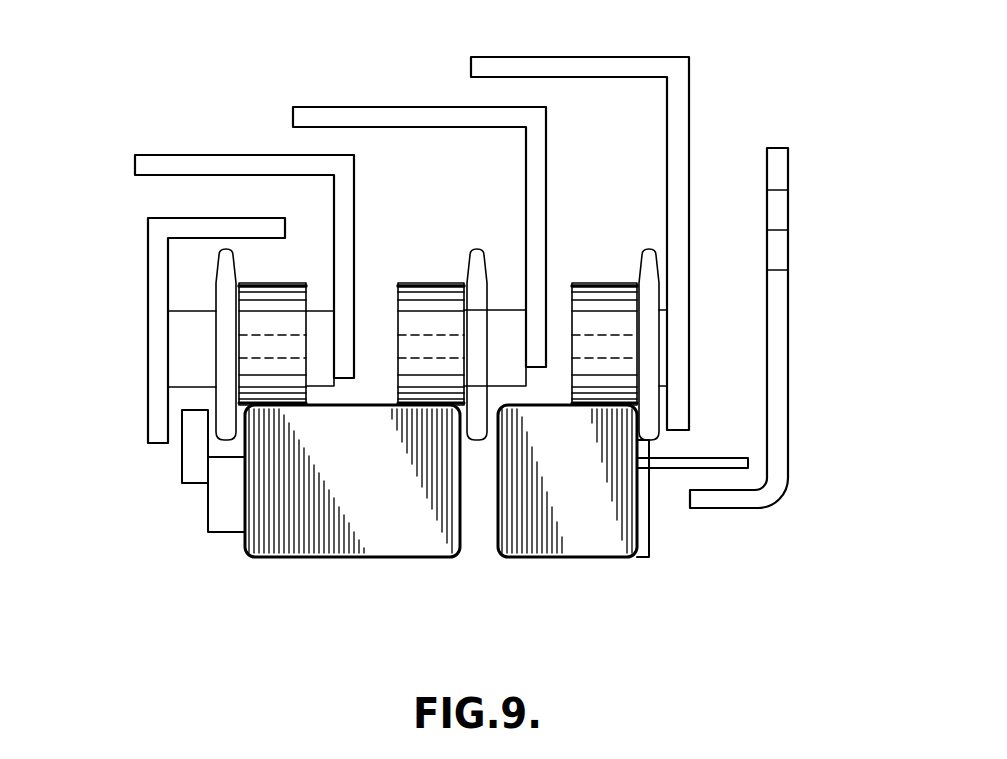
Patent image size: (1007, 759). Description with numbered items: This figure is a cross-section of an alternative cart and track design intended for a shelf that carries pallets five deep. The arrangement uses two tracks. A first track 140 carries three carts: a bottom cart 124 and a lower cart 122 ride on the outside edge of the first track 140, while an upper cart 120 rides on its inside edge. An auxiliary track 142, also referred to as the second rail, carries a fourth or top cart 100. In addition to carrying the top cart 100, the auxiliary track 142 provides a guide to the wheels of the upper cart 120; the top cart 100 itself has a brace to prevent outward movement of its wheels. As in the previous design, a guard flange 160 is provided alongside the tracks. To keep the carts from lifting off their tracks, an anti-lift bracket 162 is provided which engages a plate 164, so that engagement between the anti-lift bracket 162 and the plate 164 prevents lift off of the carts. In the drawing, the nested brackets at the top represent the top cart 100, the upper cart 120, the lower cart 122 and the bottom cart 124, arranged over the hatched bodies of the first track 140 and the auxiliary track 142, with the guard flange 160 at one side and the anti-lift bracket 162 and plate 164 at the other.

The top cart 100 is at (689, 75).
The upper cart 120 is at (547, 168).
The lower cart 122 is at (354, 250).
The bottom cart 124 is at (148, 263).
The first track 140 is at (300, 557).
The auxiliary track 142 is at (597, 558).
The guard flange 160 is at (208, 505).
The anti-lift bracket 162 is at (789, 318).
The plate 164 is at (737, 457).